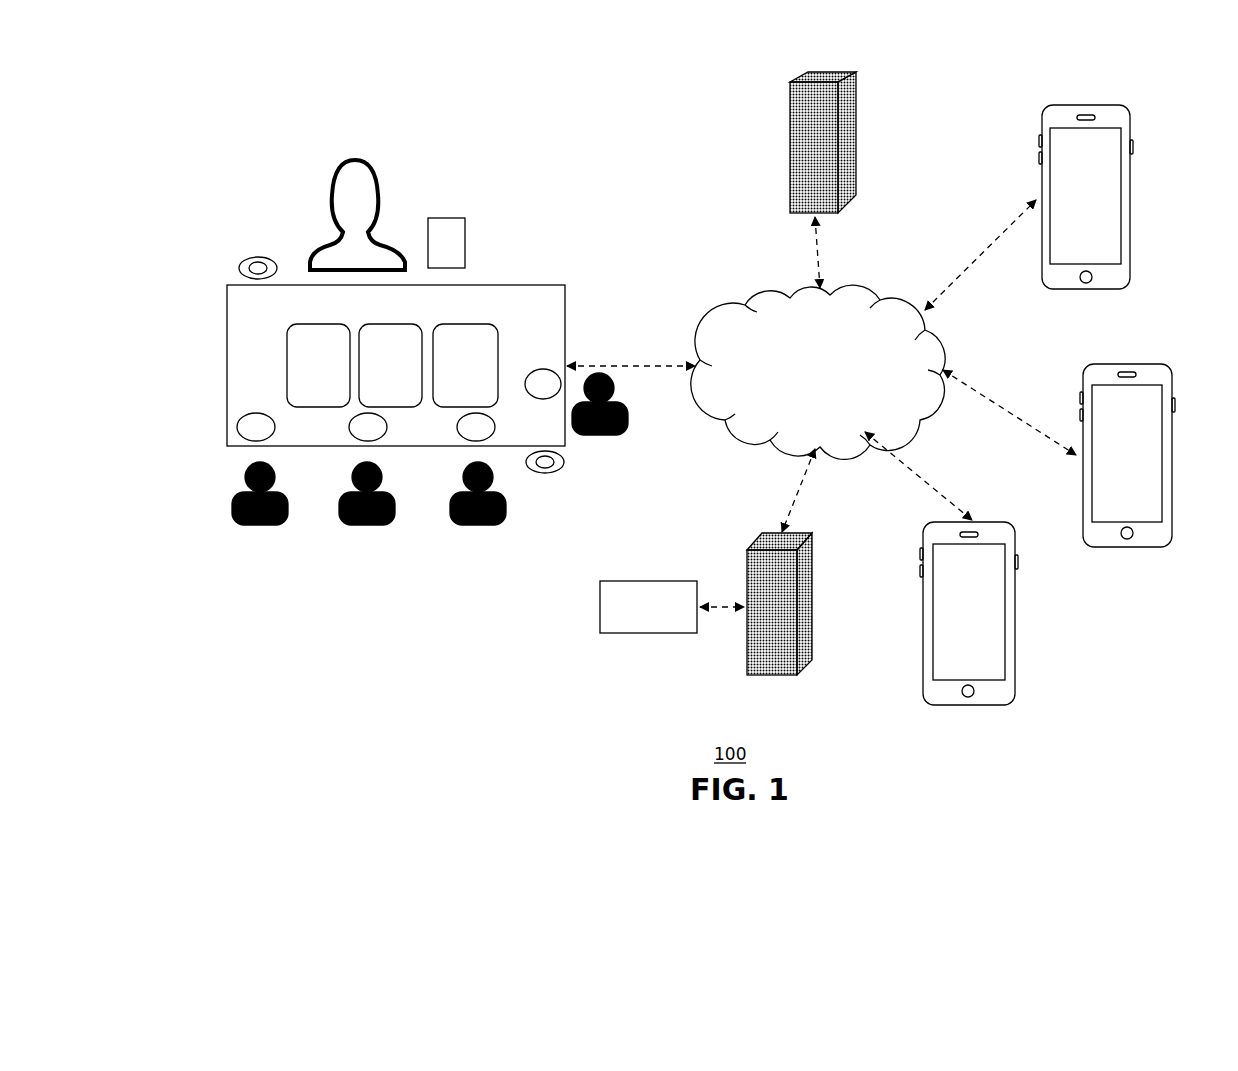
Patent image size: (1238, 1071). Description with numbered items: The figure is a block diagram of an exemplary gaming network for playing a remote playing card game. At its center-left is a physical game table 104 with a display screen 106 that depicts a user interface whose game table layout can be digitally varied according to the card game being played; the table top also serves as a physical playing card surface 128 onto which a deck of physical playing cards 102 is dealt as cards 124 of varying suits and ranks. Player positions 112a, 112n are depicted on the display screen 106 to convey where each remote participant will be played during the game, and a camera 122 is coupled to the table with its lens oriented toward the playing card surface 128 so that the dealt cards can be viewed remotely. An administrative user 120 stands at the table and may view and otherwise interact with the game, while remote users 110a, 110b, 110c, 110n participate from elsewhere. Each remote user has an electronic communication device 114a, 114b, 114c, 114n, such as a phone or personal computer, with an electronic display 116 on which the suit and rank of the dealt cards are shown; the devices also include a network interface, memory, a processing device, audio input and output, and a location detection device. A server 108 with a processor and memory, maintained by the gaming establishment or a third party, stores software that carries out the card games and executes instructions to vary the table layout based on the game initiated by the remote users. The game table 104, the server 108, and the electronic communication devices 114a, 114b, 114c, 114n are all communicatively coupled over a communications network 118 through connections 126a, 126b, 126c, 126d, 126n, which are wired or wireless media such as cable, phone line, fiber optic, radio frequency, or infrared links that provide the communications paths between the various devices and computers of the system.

The physical playing cards 102 is at (455, 247).
The physical game table 104 is at (565, 302).
The display screen 106 is at (255, 345).
The server 108 is at (855, 176).
The remote user 110a is at (247, 528).
The remote user 110b is at (365, 528).
The remote user 110c is at (475, 528).
The remote user 110n is at (605, 437).
The player position 112a is at (245, 428).
The player position 112n is at (551, 380).
The electronic communication device 114a is at (1115, 222).
The electronic communication device 114b is at (1150, 492).
The electronic communication device 114c is at (1000, 630).
The electronic communication device 114n is at (804, 602).
The electronic display 116 is at (1058, 157).
The network 118 is at (837, 395).
The administrative user 120 is at (362, 190).
The camera 122 is at (253, 257).
The cards 124 is at (283, 318).
The connection 126a is at (822, 264).
The connection 126b is at (965, 270).
The connection 126c is at (1003, 407).
The connection 126d is at (930, 485).
The connection 126n is at (803, 479).
The physical playing card surface 128 is at (516, 305).